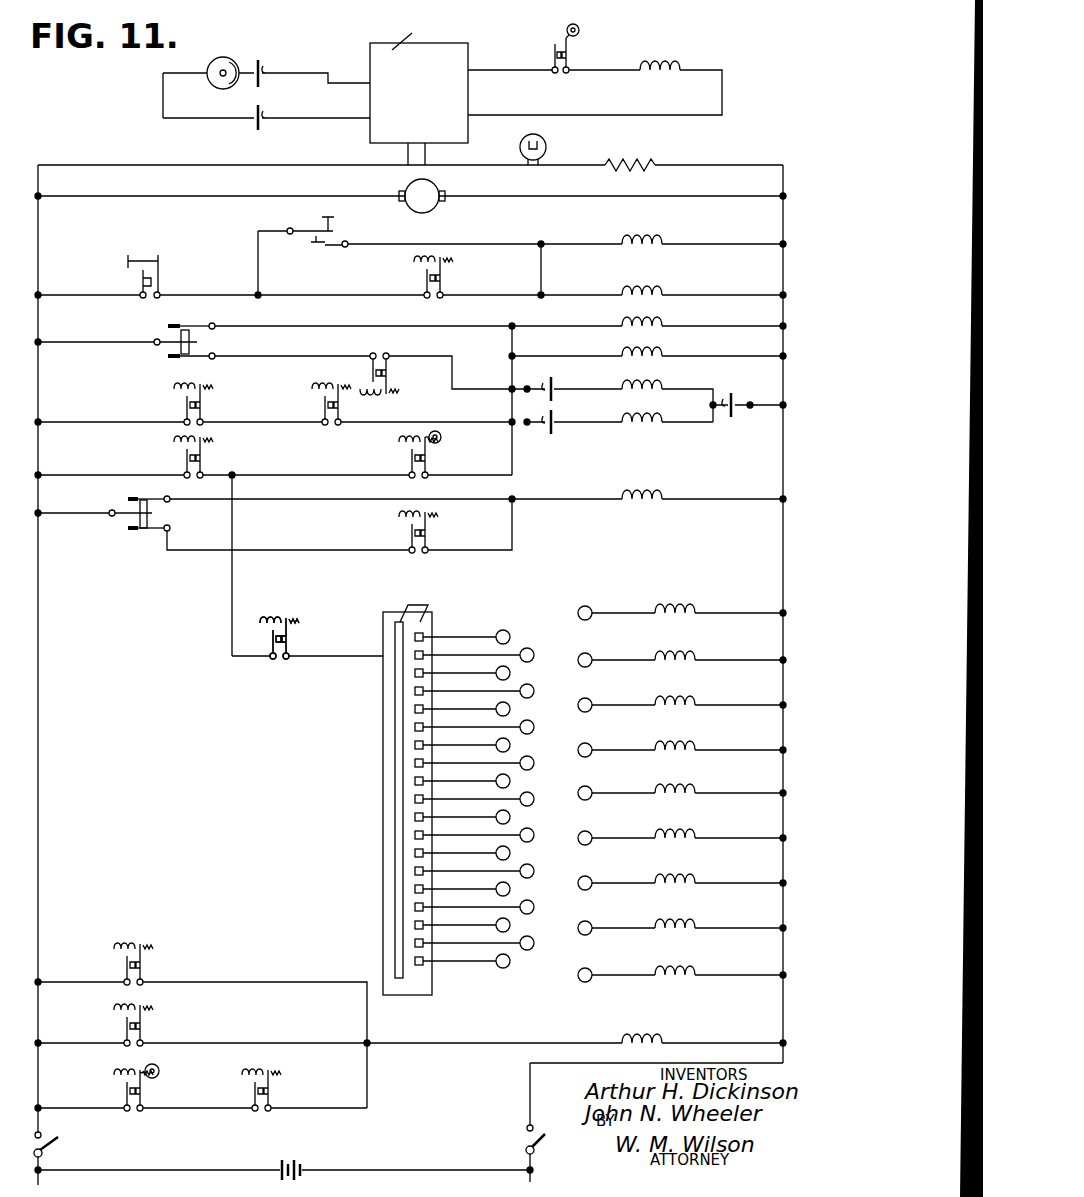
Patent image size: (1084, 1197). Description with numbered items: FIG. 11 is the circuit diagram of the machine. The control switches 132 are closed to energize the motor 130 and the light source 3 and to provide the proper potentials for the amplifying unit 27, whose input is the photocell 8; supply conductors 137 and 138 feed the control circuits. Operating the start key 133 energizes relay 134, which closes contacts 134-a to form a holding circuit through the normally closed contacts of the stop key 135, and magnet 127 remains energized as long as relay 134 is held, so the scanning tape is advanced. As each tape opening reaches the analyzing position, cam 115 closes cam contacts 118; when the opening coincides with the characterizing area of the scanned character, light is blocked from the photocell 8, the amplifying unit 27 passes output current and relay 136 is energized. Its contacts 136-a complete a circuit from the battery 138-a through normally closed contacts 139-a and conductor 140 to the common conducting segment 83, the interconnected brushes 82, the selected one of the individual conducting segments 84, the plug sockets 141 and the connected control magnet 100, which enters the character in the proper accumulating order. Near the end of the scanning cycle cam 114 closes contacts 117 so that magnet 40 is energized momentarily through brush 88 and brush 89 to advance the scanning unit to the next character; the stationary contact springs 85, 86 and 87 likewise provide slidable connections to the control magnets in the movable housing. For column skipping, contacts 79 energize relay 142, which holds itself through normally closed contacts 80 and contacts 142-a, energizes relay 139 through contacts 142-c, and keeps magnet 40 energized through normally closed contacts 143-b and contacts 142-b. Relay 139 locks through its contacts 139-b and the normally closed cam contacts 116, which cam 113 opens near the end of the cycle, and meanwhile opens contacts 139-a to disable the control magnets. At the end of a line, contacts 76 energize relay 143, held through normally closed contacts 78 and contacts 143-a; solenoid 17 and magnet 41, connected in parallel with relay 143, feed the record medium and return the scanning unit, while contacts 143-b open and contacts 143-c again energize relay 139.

The photocell 8 is at (207, 70).
The stationary contact spring 85 is at (270, 76).
The stationary contact spring 86 is at (271, 126).
The amplifying unit 27 is at (370, 50).
The cam contacts 118 is at (552, 50).
The cam 115 is at (581, 34).
The relay 136 is at (664, 66).
The light source 3 is at (546, 147).
The motor 130 is at (436, 209).
The start key 133 is at (318, 220).
The stop key 135 is at (126, 263).
The relay 134 is at (656, 240).
The contacts 134-a is at (445, 281).
The magnet 127 is at (640, 290).
The conductor 138 is at (786, 277).
The conductor 137 is at (40, 672).
The contacts 76 is at (198, 335).
The normally closed contacts 78 is at (175, 353).
The relay 143 is at (660, 327).
The contacts 143-a is at (388, 372).
The solenoid 17 is at (620, 355).
The magnet 41 is at (620, 387).
The magnet 40 is at (620, 420).
The stationary contact spring 87 is at (540, 386).
The brush 88 is at (547, 427).
The brush 89 is at (740, 411).
The relay 142 is at (640, 503).
The contacts 142-b is at (342, 409).
The normally closed contacts 143-b is at (184, 418).
The relay 139 is at (170, 446).
The normally closed contacts 139-a is at (203, 463).
The contacts 117 is at (408, 463).
The cam 114 is at (441, 441).
The contacts 79 is at (130, 506).
The normally closed contacts 80 is at (152, 519).
The contacts 142-a is at (428, 538).
The brushes 82 is at (422, 608).
The common conducting segment 83 is at (383, 823).
The conducting segments 84 is at (415, 764).
The plug sockets 141 is at (578, 620).
The control magnet 100 is at (688, 618).
The conductor 140 is at (230, 608).
The contacts 136-a is at (268, 658).
The contacts 143-c is at (126, 971).
The contacts 142-c is at (126, 1032).
The normally closed cam contacts 116 is at (126, 1098).
The cam 113 is at (163, 1069).
The contacts 139-b is at (257, 1106).
The control switches 132 is at (62, 1153).
The battery 138-a is at (320, 1149).